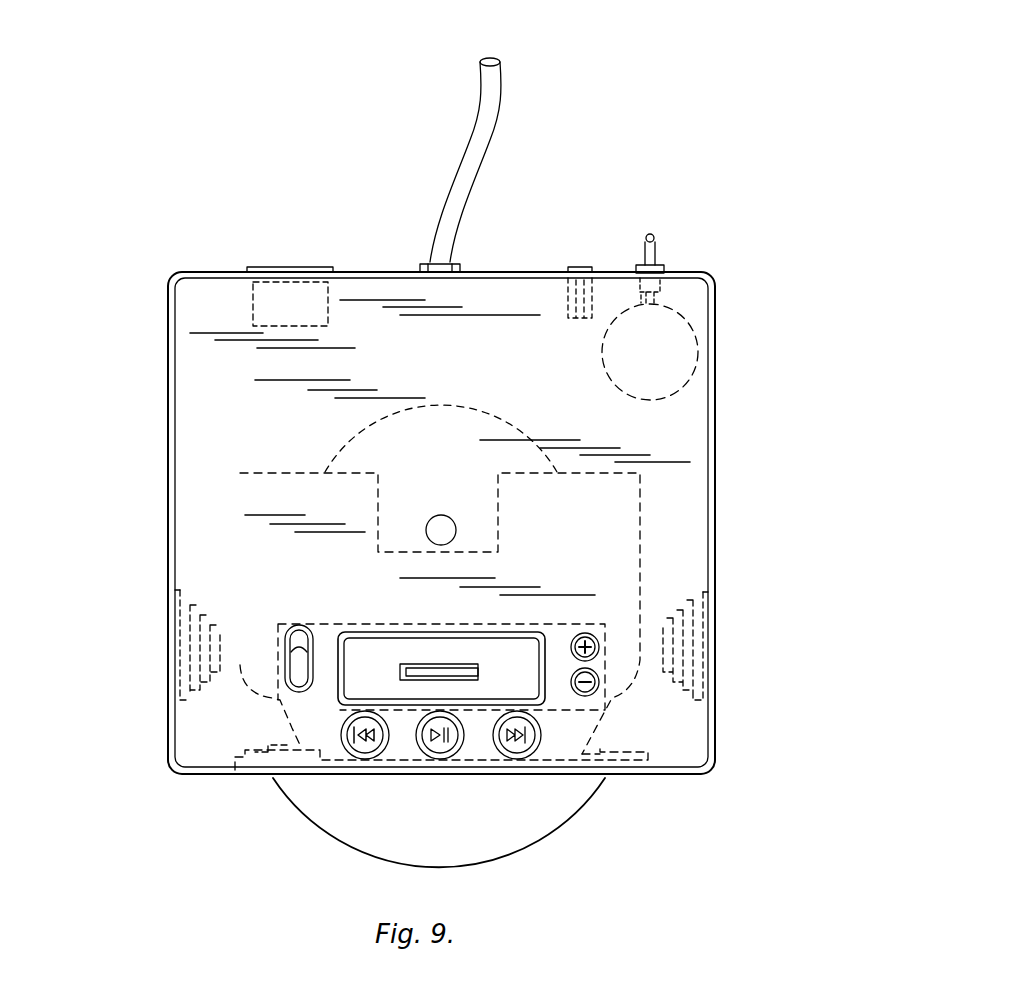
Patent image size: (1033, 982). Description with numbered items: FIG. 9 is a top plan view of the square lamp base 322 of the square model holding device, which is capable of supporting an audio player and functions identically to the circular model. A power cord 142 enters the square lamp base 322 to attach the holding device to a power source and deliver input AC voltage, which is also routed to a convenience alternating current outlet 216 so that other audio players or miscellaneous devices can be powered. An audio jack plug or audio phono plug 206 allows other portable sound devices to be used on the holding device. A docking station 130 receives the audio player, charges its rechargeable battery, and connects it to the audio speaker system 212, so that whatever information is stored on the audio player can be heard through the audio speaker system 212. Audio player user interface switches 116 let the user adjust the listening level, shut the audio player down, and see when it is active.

The square lamp base 322 is at (580, 183).
The power cord 142 is at (482, 140).
The convenience alternating current (AC) outlet 216 is at (292, 268).
The audio jack plug or audio phono plug 206 is at (655, 250).
The docking station 130 is at (480, 665).
The audio speaker system 212 is at (272, 748).
The audio player user interface switches 116 is at (275, 810).